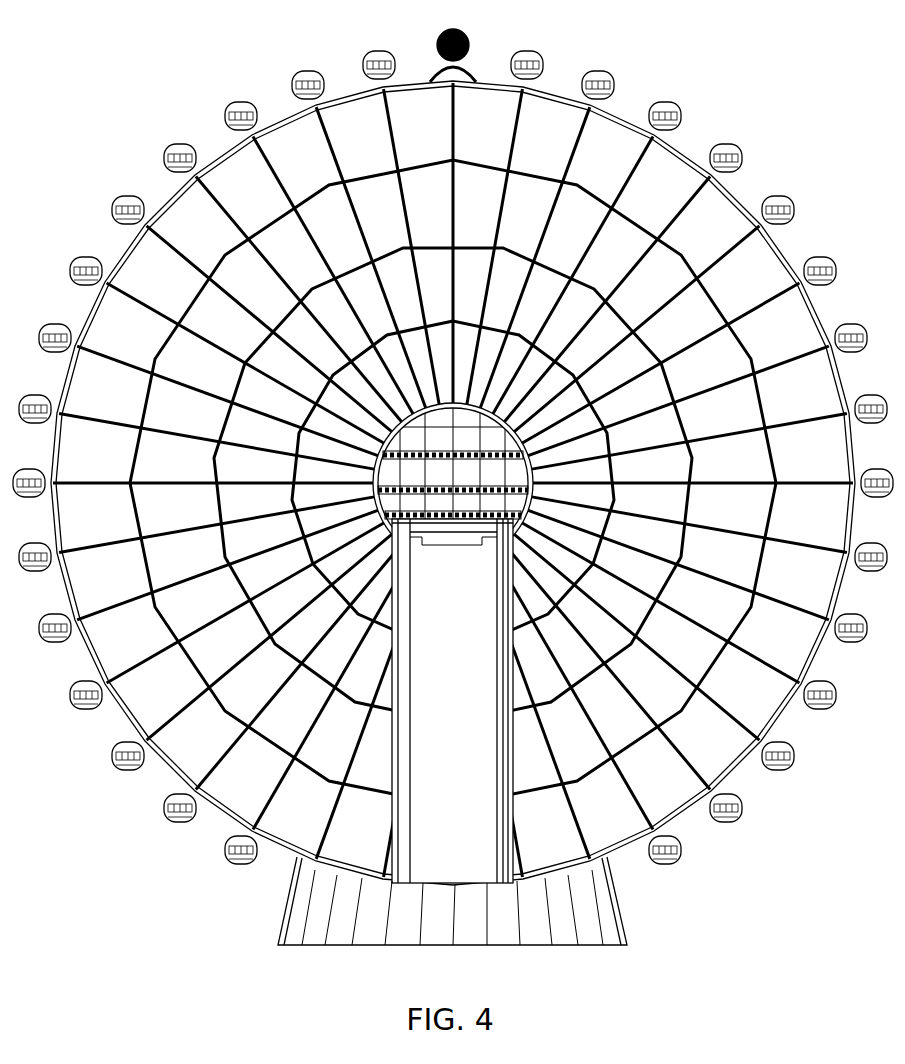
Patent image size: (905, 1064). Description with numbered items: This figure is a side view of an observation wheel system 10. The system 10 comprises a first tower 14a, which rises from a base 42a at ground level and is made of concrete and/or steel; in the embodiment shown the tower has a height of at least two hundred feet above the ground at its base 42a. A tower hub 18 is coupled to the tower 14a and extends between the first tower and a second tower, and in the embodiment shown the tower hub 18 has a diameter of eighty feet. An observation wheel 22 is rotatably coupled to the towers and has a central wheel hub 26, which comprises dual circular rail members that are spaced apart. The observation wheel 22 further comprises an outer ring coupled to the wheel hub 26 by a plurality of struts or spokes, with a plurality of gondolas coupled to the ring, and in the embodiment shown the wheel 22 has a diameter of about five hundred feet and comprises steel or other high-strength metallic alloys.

The observation wheel system 10 is at (124, 68).
The observation wheel 22 is at (752, 170).
The tower hub 18 is at (481, 413).
The wheel hub 26 is at (522, 440).
The first tower 14a is at (434, 708).
The base 42a is at (286, 900).